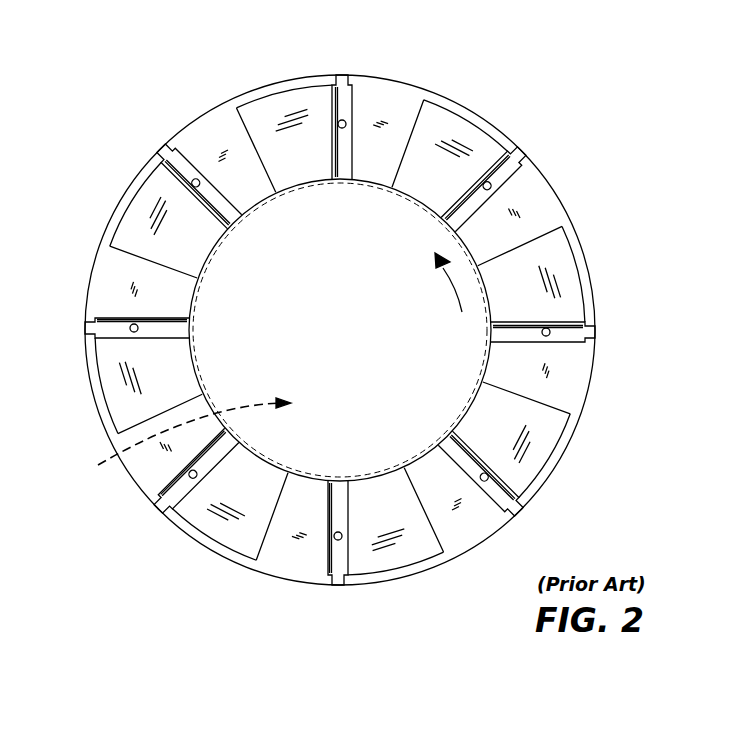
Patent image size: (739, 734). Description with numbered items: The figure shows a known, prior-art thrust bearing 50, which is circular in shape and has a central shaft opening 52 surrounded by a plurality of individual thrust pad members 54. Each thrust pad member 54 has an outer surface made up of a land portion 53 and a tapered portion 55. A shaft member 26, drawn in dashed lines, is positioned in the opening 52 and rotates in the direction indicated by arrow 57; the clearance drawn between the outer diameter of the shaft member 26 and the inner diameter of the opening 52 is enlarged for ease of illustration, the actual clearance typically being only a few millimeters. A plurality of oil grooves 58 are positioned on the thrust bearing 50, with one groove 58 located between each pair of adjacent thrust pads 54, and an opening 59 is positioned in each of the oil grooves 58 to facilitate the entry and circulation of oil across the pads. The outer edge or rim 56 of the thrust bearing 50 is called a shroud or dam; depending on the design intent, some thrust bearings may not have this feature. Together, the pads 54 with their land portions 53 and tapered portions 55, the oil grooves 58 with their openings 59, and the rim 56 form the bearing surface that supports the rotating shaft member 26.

The shaft member 26 is at (181, 439).
The thrust bearing 50 is at (530, 90).
The central shaft opening 52 is at (199, 357).
The land portion 53 is at (230, 117).
The thrust pad member 54 is at (270, 105).
The tapered portion 55 is at (302, 100).
The outer edge or rim 56 is at (597, 315).
The arrow 57 is at (455, 293).
The oil groove 58 is at (448, 439).
The opening 59 is at (547, 334).